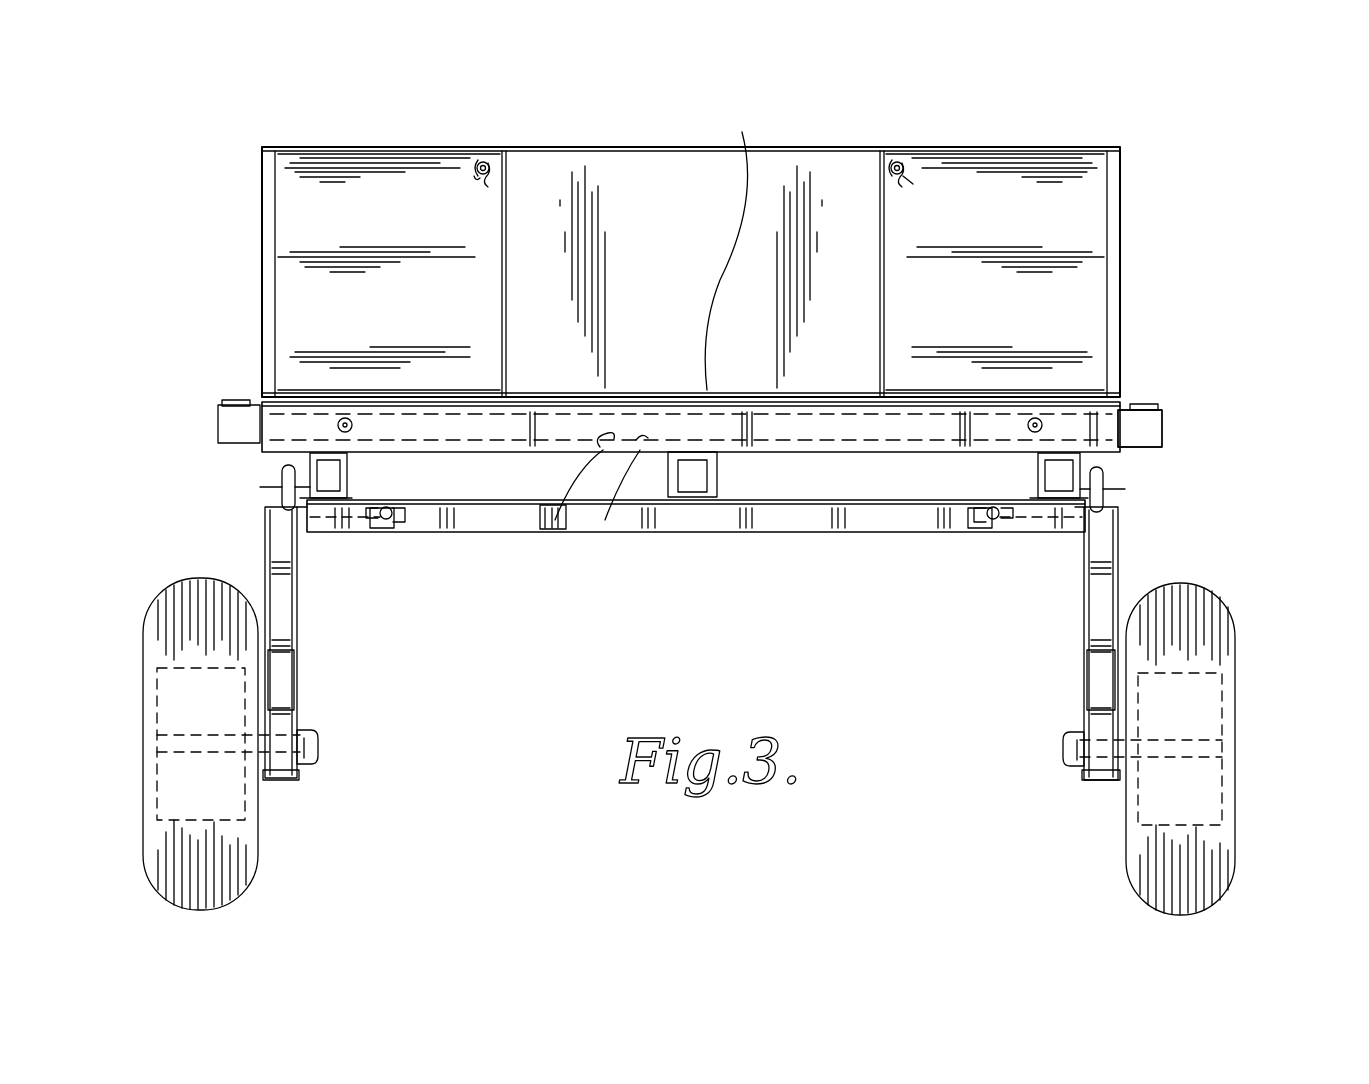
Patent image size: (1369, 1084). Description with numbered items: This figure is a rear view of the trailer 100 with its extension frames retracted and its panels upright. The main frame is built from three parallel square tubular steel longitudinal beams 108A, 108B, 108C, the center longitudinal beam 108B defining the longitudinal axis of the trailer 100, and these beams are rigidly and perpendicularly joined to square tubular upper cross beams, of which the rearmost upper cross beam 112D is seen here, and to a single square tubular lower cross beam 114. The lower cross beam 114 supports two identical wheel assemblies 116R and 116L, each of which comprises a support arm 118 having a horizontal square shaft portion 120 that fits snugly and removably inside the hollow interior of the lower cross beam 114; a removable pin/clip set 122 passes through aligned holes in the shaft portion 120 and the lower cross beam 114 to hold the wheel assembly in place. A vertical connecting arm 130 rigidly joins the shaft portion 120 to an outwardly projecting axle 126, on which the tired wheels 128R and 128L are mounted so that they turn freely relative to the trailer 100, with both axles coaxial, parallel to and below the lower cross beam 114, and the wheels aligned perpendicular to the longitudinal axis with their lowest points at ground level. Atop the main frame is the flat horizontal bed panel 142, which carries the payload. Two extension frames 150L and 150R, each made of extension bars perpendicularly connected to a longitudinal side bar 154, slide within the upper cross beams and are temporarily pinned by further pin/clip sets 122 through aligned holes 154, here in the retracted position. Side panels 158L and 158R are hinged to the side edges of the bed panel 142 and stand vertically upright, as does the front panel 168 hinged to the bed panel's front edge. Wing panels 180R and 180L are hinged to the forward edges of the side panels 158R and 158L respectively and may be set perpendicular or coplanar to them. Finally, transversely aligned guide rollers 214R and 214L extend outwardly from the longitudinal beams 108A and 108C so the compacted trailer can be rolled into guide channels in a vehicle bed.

The trailer 100 is at (355, 125).
The longitudinal beam 108A is at (350, 468).
The center longitudinal beam 108B is at (736, 534).
The longitudinal beam 108C is at (1040, 475).
The upper cross beam 112D is at (551, 537).
The lower cross beam 114 is at (680, 535).
The wheel assembly 116L is at (290, 783).
The wheel assembly 116R is at (1195, 580).
The support arm 118 is at (268, 545).
The shaft portion 120 is at (378, 530).
The pin/clip set 122 is at (483, 160).
The axle 126 is at (320, 738).
The tired wheel 128L is at (160, 590).
The tired wheel 128R is at (1226, 640).
The vertical connecting arm 130 is at (300, 660).
The bed panel 142 is at (592, 633).
The extension frame 150L is at (218, 425).
The extension frame 150R is at (1164, 428).
The longitudinal side bar 154 is at (240, 403).
The side panel 158L is at (262, 213).
The side panel 158R is at (1120, 240).
The front panel 168 is at (655, 205).
The wing panel 180L is at (505, 215).
The wing panel 180R is at (1065, 211).
The guide roller 214L is at (288, 470).
The guide roller 214R is at (1100, 470).